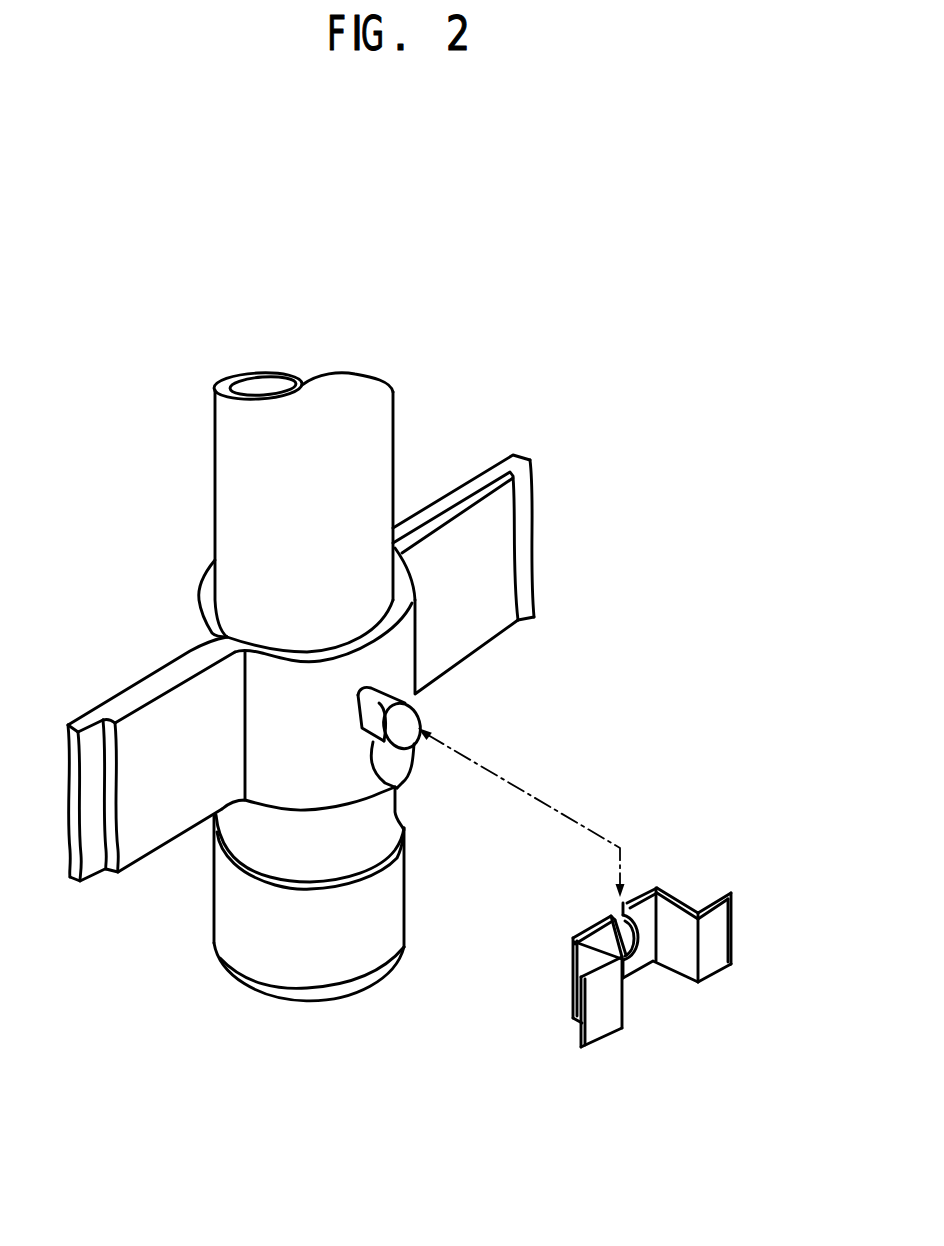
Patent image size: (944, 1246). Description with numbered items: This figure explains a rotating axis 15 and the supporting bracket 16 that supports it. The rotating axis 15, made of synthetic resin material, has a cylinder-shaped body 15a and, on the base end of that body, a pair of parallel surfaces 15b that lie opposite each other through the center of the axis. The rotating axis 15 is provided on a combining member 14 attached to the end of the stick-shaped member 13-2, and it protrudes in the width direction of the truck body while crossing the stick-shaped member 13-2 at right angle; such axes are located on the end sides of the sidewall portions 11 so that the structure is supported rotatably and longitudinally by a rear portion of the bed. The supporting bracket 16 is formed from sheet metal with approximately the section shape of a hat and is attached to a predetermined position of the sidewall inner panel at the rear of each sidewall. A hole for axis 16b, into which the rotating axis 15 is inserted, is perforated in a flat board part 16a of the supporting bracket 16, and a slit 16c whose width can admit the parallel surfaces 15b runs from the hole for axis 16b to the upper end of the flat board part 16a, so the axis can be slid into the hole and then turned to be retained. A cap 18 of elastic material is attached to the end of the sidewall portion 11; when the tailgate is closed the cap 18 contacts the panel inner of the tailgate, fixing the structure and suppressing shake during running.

The sidewall portion 11 is at (315, 467).
The stick-shaped member 13-2 is at (338, 570).
The combining member 14 is at (455, 647).
The rotating axis 15 is at (474, 805).
The cylinder-shaped body 15a is at (363, 718).
The parallel surfaces 15b is at (324, 770).
The supporting bracket 16 is at (661, 916).
The flat board part 16a is at (648, 912).
The hole for axis 16b is at (698, 980).
The slit 16c is at (617, 913).
The cap 18 is at (272, 950).